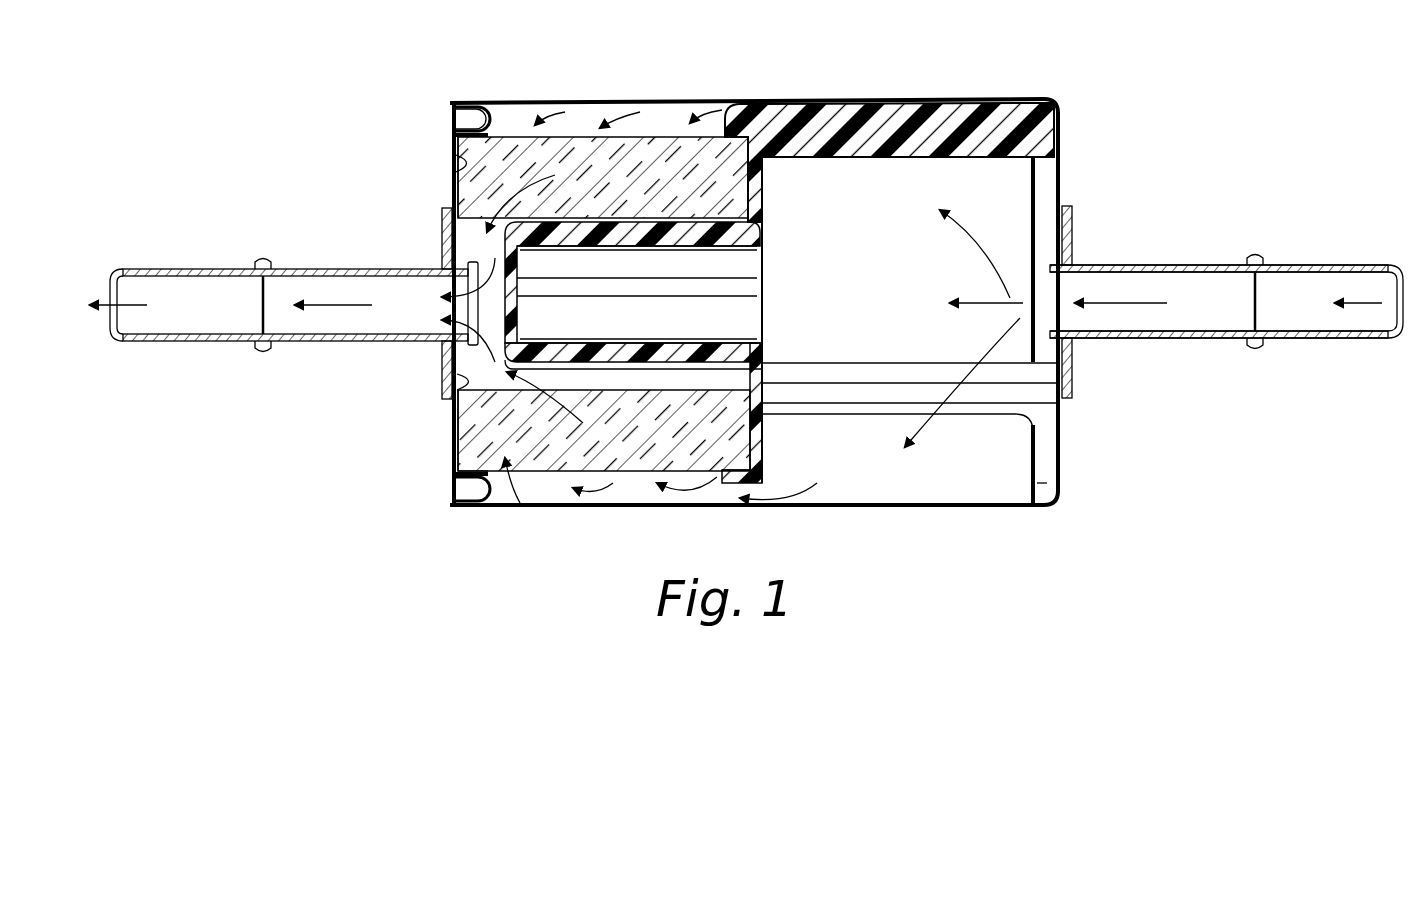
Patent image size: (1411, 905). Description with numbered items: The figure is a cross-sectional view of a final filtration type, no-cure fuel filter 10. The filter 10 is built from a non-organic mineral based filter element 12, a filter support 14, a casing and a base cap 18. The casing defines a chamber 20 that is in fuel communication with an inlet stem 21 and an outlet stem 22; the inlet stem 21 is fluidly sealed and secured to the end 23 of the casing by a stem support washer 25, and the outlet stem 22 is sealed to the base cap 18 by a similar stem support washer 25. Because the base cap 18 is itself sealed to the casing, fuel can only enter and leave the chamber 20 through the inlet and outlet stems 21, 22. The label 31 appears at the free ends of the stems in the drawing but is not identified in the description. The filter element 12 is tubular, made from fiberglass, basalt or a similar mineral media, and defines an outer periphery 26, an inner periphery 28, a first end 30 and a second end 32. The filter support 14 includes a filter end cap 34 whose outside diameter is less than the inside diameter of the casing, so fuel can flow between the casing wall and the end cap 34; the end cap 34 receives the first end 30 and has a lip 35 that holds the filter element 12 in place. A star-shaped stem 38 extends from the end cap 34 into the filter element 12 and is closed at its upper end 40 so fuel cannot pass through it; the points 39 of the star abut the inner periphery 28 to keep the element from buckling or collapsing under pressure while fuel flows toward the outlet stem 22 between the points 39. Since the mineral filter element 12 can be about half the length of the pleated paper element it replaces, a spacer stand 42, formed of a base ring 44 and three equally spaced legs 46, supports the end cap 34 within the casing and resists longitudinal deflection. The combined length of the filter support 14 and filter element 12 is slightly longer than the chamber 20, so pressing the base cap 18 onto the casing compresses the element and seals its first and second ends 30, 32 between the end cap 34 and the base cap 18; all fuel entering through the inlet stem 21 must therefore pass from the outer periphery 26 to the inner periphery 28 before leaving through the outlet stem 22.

The final filtration type fuel filter 10 is at (480, 58).
The non-organic mineral based filter element 12 is at (590, 150).
The filter support 14 is at (925, 108).
The base cap 18 is at (452, 114).
The chamber 20 is at (925, 487).
The inlet stem 21 is at (1302, 265).
The outlet stem 22 is at (172, 269).
The end of the casing 23 is at (1063, 182).
The stem support washer 25 is at (442, 365).
The outer periphery 26 is at (505, 468).
The inner periphery 28 is at (460, 385).
The first end 30 is at (745, 185).
The tube end 31 is at (115, 307).
The second end 32 is at (456, 162).
The filter end cap 34 is at (765, 440).
The lip 35 is at (728, 472).
The star-shaped stem 38 is at (745, 318).
The points of the star 39 is at (598, 238).
The upper end of the stem 40 is at (515, 322).
The spacer stand 42 is at (825, 360).
The base ring 44 is at (1047, 461).
The legs 46 is at (878, 158).